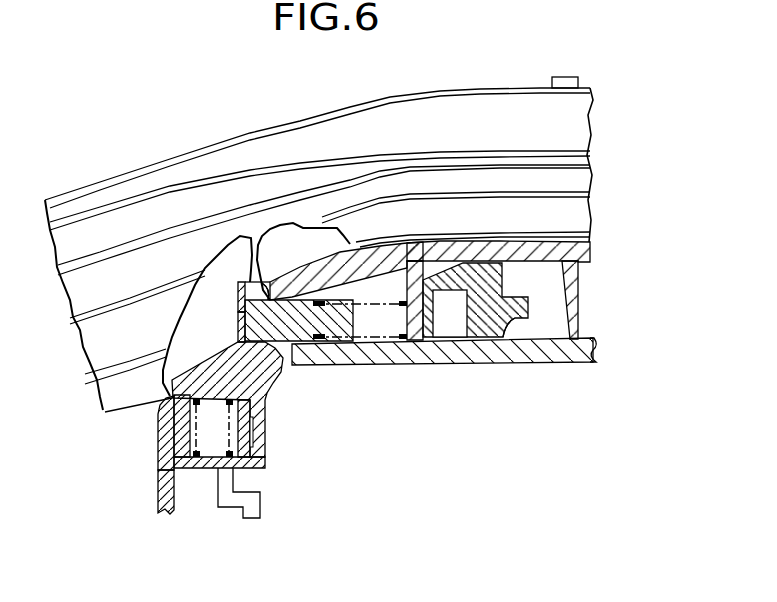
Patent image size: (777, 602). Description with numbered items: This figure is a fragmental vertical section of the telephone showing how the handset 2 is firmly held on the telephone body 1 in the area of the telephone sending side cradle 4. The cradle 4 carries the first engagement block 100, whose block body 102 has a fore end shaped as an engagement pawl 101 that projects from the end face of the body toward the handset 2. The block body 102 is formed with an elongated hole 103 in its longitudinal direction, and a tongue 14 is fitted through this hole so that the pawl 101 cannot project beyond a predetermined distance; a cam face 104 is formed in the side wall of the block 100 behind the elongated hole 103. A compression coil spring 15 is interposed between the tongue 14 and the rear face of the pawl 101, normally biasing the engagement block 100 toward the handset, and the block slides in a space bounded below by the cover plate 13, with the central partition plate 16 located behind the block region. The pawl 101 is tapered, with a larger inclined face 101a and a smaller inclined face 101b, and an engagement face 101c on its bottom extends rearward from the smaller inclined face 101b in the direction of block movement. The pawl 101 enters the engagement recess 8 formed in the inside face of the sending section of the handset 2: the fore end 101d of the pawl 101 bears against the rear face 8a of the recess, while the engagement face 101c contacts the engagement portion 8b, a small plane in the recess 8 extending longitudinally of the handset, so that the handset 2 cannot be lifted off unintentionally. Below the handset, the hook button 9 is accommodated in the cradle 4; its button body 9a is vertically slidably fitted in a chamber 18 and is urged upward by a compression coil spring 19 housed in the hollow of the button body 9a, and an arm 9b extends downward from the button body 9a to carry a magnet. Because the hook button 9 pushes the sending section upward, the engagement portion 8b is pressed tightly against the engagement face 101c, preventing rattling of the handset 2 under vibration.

The telephone body 1 is at (151, 499).
The handset 2 is at (81, 183).
The telephone sending side cradle 4 is at (147, 405).
The engagement recess 8 is at (254, 268).
The rear face of the engagement recess 8a is at (246, 279).
The engagement portion 8b is at (241, 341).
The hook button 9 is at (251, 476).
The button body 9a is at (186, 422).
The arm 9b is at (233, 500).
The cover plate 13 is at (591, 337).
The tongue 14 is at (415, 353).
The compression coil spring 15 is at (386, 340).
The central partition plate 16 is at (571, 347).
The chamber 18 is at (174, 436).
The compression coil spring 19 is at (207, 442).
The first engagement block 100 is at (529, 300).
The engagement pawl 101 is at (442, 364).
The larger inclined face 101a is at (271, 279).
The smaller inclined face 101b is at (243, 333).
The engagement face 101c is at (279, 376).
The fore end of the pawl 101d is at (239, 299).
The block body 102 is at (507, 333).
The elongated hole 103 is at (381, 250).
The cam face 104 is at (468, 322).